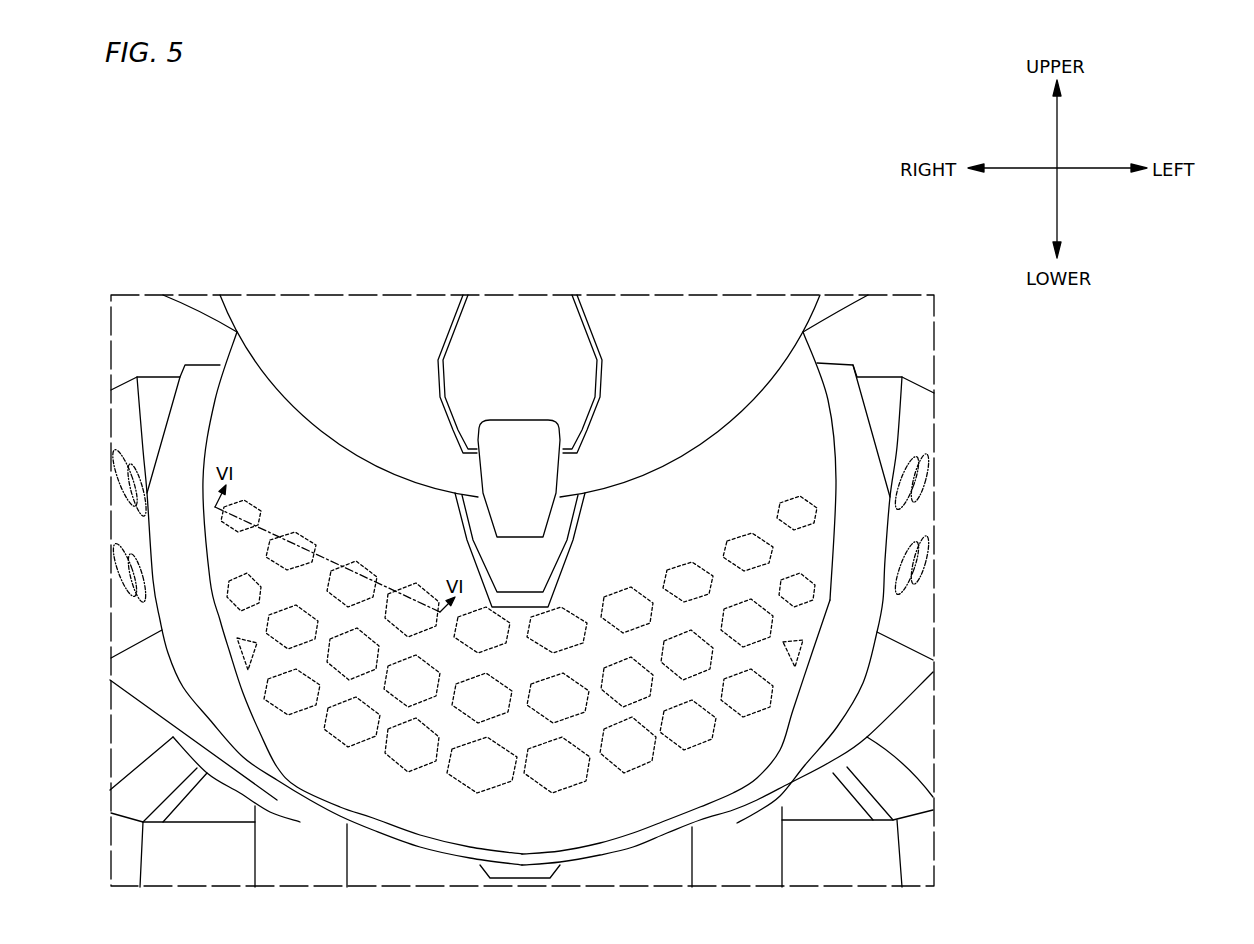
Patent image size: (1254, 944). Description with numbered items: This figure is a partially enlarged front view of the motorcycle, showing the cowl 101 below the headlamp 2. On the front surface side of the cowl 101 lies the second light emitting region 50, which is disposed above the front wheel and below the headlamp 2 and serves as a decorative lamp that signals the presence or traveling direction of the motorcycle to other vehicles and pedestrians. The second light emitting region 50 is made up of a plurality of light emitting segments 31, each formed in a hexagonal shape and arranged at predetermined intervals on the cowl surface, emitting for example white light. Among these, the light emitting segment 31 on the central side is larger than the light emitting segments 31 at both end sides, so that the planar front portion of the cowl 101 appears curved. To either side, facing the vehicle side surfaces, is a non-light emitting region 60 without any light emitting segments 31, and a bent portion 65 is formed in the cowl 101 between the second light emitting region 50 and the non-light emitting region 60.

The headlamp 2 is at (560, 350).
The light emitting segment 31 is at (612, 590).
The second light emitting region 50 is at (692, 528).
The non-light emitting region 60 is at (863, 462).
The bent portion 65 is at (837, 518).
The cowl 101 is at (800, 413).